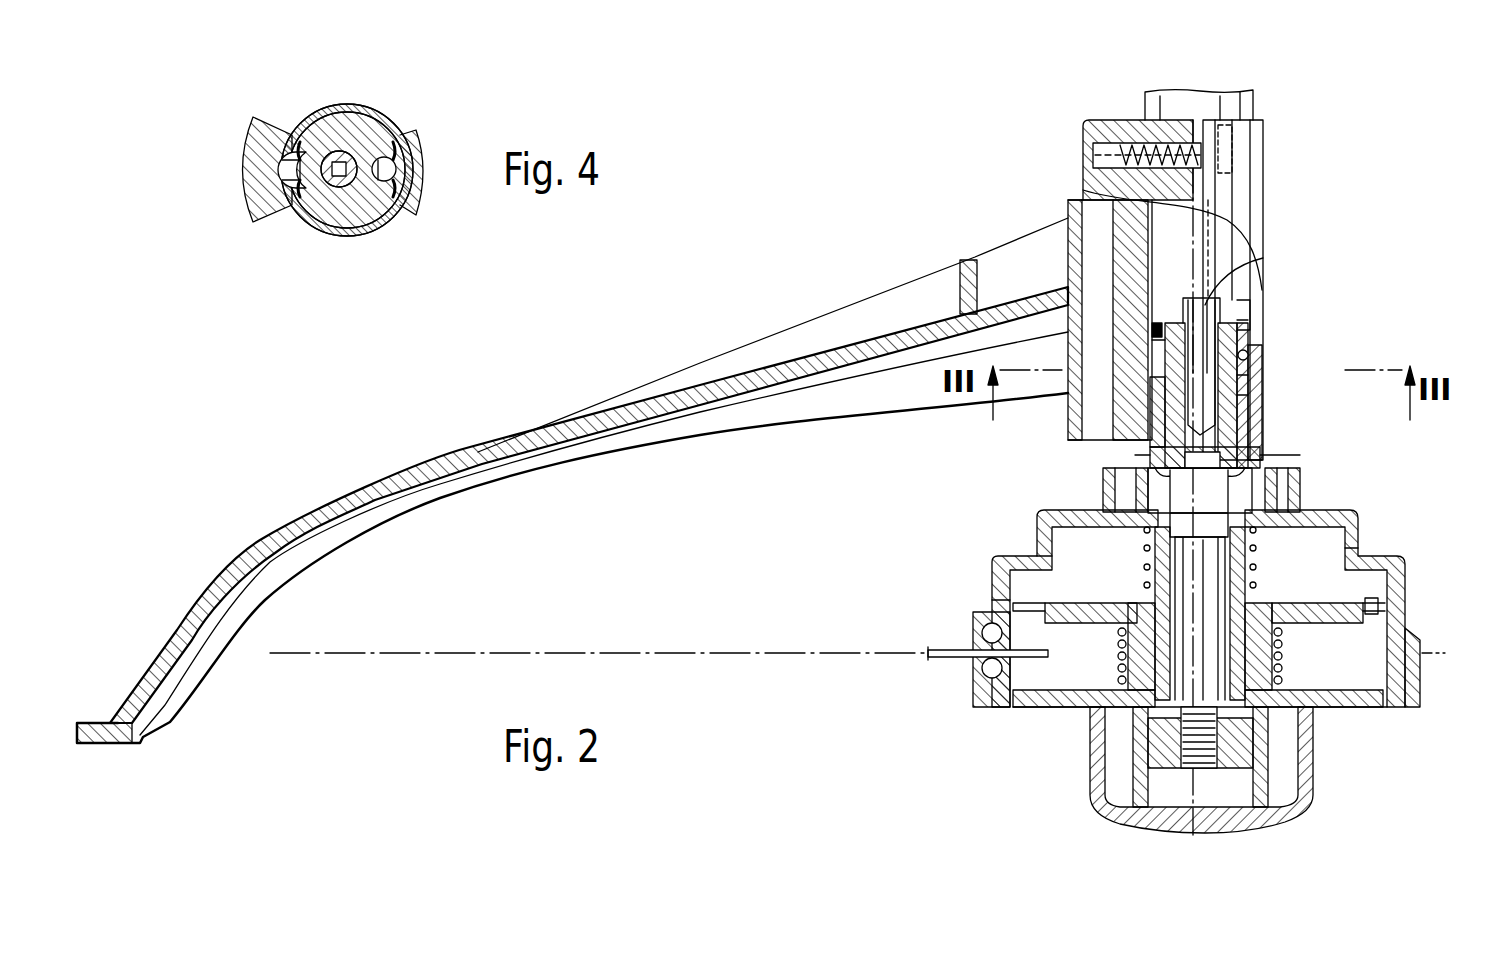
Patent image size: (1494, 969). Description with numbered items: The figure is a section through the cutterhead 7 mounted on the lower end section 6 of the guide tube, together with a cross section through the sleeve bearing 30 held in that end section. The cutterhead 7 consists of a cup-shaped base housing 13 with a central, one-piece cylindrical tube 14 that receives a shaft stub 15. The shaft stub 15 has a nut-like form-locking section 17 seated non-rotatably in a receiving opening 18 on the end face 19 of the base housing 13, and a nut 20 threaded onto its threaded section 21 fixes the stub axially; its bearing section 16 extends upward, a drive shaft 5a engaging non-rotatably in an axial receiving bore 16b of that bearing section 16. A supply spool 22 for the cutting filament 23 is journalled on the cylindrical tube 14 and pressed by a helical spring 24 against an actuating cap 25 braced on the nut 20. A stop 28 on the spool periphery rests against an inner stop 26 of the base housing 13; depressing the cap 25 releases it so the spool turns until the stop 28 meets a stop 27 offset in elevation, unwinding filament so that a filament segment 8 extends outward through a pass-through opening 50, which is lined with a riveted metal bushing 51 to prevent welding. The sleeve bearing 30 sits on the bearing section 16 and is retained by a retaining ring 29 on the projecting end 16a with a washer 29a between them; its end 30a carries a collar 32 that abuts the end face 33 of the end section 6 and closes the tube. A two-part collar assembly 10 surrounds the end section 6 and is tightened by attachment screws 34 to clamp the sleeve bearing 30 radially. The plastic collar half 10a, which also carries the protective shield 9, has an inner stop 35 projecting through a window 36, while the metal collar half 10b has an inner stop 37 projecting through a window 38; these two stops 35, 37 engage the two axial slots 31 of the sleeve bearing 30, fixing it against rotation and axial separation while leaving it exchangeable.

In FIG. 2, the drive shaft 5a is at (1232, 241).
In FIG. 4, the end section 6 is at (339, 236).
In FIG. 2, the end section 6 is at (1252, 96).
In FIG. 2, the cutterhead 7 is at (958, 533).
In FIG. 2, the filament segment 8 is at (935, 666).
In FIG. 2, the protective shield 9 is at (660, 395).
In FIG. 2, the collar assembly 10 is at (1110, 112).
In FIG. 4, the collar half 10a is at (256, 215).
In FIG. 2, the collar half 10a is at (1083, 181).
In FIG. 4, the collar half 10b is at (406, 202).
In FIG. 2, the collar half 10b is at (1258, 173).
In FIG. 2, the base housing 13 is at (1041, 533).
In FIG. 2, the cylindrical tube 14 is at (1262, 579).
In FIG. 2, the shaft stub 15 is at (1155, 539).
In FIG. 4, the bearing section 16 is at (341, 151).
In FIG. 2, the bearing section 16 is at (1232, 401).
In FIG. 2, the projecting end 16a is at (1258, 313).
In FIG. 2, the axial receiving bore 16b is at (1218, 281).
In FIG. 2, the form-locking section 17 is at (1252, 493).
In FIG. 2, the receiving opening 18 is at (1352, 546).
In FIG. 2, the end face 19 is at (1325, 515).
In FIG. 2, the nut 20 is at (1160, 746).
In FIG. 2, the threaded section 21 is at (1198, 772).
In FIG. 2, the supply spool 22 is at (1032, 715).
In FIG. 2, the cutting filament 23 is at (1285, 661).
In FIG. 2, the helical spring 24 is at (1145, 567).
In FIG. 2, the actuating cap 25 is at (1240, 833).
In FIG. 2, the inner stop 26 is at (1380, 607).
In FIG. 2, the stop 27 is at (1008, 576).
In FIG. 2, the stop 28 is at (1402, 593).
In FIG. 2, the retaining ring 29 is at (1242, 313).
In FIG. 2, the washer 29a is at (1242, 323).
In FIG. 4, the sleeve bearing 30 is at (362, 138).
In FIG. 2, the sleeve bearing 30 is at (1237, 433).
In FIG. 2, the end 30a is at (1265, 463).
In FIG. 4, the slots 31 is at (305, 112).
In FIG. 2, the slots 31 is at (1160, 323).
In FIG. 2, the collar 32 is at (1140, 463).
In FIG. 2, the end face 33 is at (1140, 456).
In FIG. 2, the attachment screws 34 is at (1230, 141).
In FIG. 4, the inner stop 35 is at (292, 167).
In FIG. 2, the inner stop 35 is at (1153, 351).
In FIG. 4, the window 36 is at (293, 179).
In FIG. 2, the window 36 is at (1152, 381).
In FIG. 4, the inner stop 37 is at (392, 166).
In FIG. 2, the inner stop 37 is at (1249, 383).
In FIG. 4, the window 38 is at (392, 172).
In FIG. 2, the window 38 is at (1249, 357).
In FIG. 2, the pass-through opening 50 is at (985, 696).
In FIG. 2, the metal bushing 51 is at (988, 641).